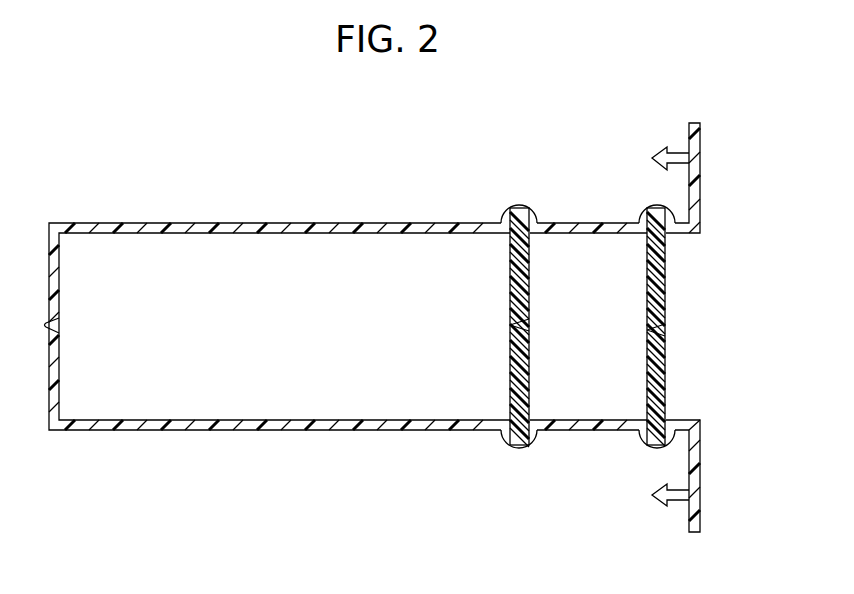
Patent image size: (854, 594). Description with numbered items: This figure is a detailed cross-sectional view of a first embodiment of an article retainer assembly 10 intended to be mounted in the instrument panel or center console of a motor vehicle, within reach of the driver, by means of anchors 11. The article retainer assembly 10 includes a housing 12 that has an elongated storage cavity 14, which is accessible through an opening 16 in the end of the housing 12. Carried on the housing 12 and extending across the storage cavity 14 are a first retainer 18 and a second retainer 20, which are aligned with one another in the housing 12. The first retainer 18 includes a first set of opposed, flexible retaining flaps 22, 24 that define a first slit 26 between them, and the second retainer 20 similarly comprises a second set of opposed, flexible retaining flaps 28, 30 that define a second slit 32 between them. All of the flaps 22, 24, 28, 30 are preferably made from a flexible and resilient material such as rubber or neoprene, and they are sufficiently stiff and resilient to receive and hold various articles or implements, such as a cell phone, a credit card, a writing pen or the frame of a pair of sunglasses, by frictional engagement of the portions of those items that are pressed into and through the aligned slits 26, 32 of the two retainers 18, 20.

The article retainer assembly 10 is at (559, 313).
The anchors 11 is at (677, 151).
The housing 12 is at (54, 431).
The storage cavity 14 is at (353, 385).
The opening 16 is at (677, 312).
The first retainer 18 is at (628, 405).
The second retainer 20 is at (490, 270).
The retaining flap 22 is at (667, 277).
The retaining flap 24 is at (667, 368).
The first slit 26 is at (667, 337).
The retaining flap 28 is at (530, 283).
The retaining flap 30 is at (530, 367).
The second slit 32 is at (530, 322).